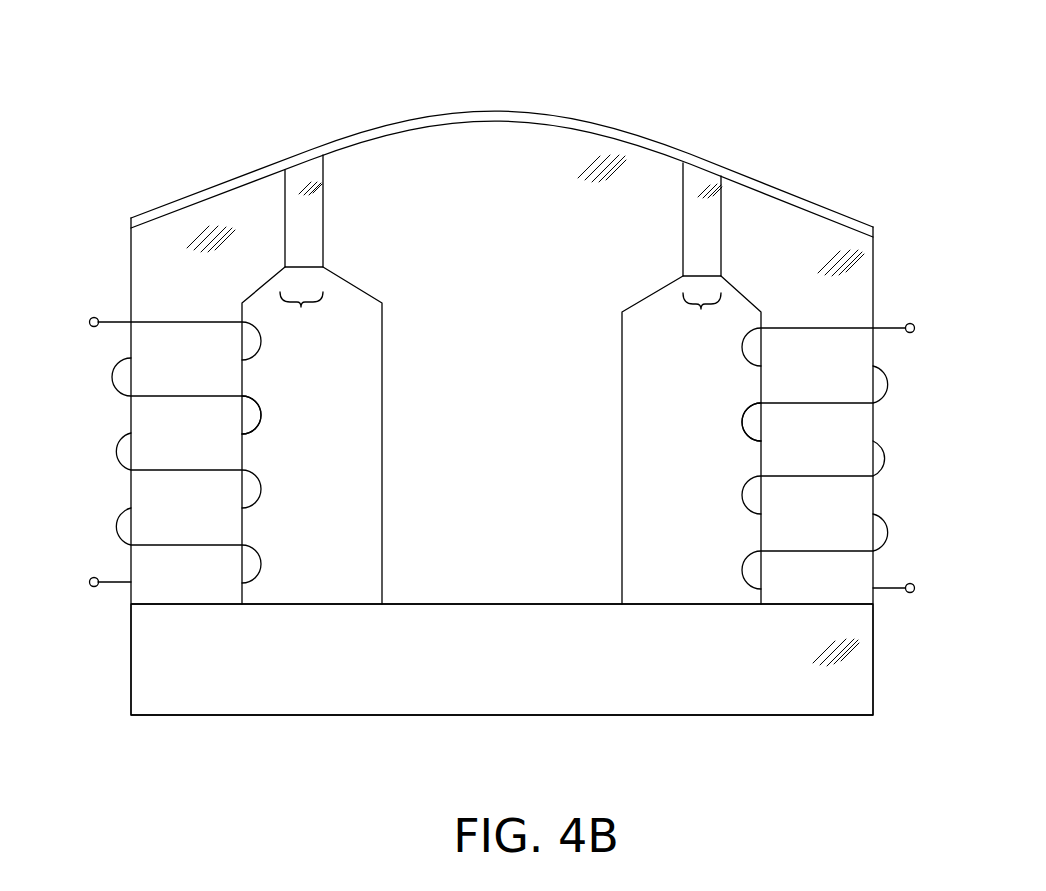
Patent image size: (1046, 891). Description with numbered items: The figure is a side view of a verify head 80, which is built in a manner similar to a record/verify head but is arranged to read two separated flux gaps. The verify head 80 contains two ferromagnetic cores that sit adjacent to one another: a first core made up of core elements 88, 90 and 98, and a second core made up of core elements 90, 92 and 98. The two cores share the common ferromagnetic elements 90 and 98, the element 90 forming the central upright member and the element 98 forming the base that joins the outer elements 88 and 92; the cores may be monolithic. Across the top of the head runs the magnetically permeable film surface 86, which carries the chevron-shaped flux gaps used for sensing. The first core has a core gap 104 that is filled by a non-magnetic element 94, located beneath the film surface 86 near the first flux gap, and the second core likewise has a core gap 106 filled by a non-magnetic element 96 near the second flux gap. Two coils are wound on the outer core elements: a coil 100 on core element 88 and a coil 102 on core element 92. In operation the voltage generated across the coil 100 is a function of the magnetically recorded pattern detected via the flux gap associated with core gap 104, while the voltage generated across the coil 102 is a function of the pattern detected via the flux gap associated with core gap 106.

The verify head 80 is at (98, 173).
The magnetically permeable film surface 86 is at (504, 110).
The core element 88 is at (174, 372).
The core element 90 is at (490, 373).
The core element 92 is at (804, 380).
The non-magnetic element 94 is at (290, 243).
The non-magnetic element 96 is at (688, 256).
The core element 98 is at (490, 675).
The coil 100 is at (262, 414).
The coil 102 is at (742, 421).
The core gap 104 is at (302, 316).
The core gap 106 is at (698, 317).